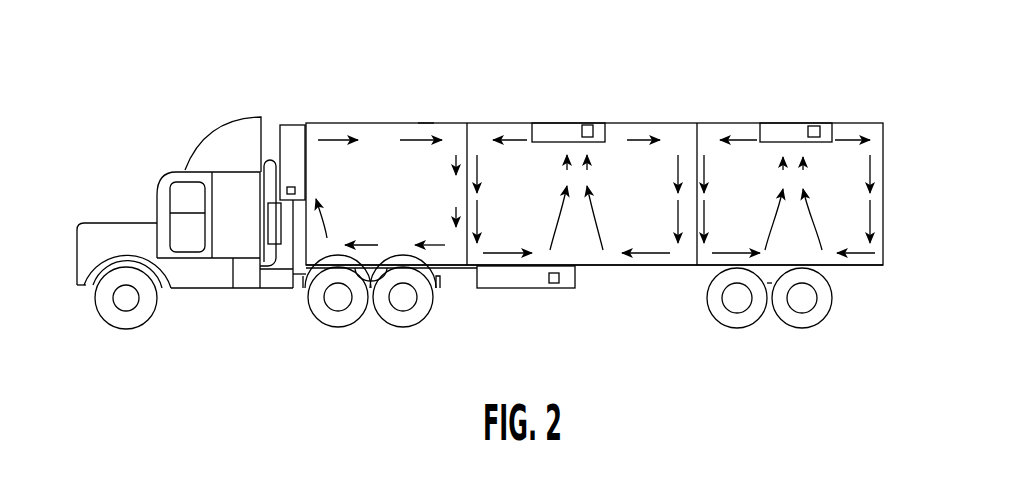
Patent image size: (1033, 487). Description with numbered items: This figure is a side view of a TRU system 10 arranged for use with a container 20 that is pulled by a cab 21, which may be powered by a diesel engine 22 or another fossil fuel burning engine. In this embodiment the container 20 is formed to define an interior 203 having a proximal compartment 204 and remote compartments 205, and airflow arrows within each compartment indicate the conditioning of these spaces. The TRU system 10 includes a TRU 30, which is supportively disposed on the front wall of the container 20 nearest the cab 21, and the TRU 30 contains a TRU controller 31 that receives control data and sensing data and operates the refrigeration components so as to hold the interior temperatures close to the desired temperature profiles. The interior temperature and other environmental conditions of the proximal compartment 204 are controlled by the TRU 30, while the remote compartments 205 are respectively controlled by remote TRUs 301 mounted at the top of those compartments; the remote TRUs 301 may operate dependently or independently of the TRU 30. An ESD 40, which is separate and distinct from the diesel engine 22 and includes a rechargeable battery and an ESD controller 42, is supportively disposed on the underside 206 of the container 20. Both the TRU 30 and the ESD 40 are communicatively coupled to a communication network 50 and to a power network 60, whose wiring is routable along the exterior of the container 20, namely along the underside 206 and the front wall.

The TRU system 10 is at (646, 61).
The container 20 is at (487, 121).
The cab 21 is at (160, 188).
The diesel engine 22 is at (92, 240).
The TRU 30 is at (290, 123).
The TRU controller 31 is at (287, 189).
The ESD 40 is at (516, 291).
The ESD controller 42 is at (558, 288).
The communication network 50 is at (290, 284).
The power network 60 is at (305, 289).
The interior 203 is at (426, 128).
The proximal compartment 204 is at (378, 178).
The remote compartments 205 is at (304, 125).
The underside 206 is at (665, 266).
The remote TRUs 301 is at (584, 123).